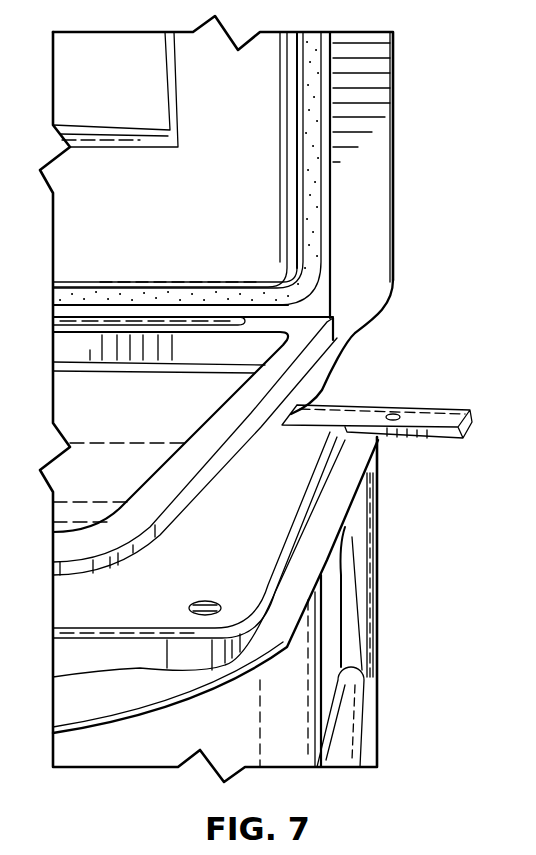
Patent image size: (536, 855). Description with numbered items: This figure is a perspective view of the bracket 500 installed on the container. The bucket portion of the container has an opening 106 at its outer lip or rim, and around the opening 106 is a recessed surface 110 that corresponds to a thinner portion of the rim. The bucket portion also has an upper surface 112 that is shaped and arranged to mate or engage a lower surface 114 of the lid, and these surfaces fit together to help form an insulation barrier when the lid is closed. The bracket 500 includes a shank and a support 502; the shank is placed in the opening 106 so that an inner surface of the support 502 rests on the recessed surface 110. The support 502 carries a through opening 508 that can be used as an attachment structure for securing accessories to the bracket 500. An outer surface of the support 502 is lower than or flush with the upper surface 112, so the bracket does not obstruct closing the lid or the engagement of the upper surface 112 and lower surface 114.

The opening 106 is at (395, 284).
The recessed surface 110 is at (288, 418).
The upper surface 112 is at (245, 568).
The lower surface 114 is at (373, 249).
The bracket 500 is at (379, 433).
The support 502 is at (419, 433).
The through opening 508 is at (394, 413).